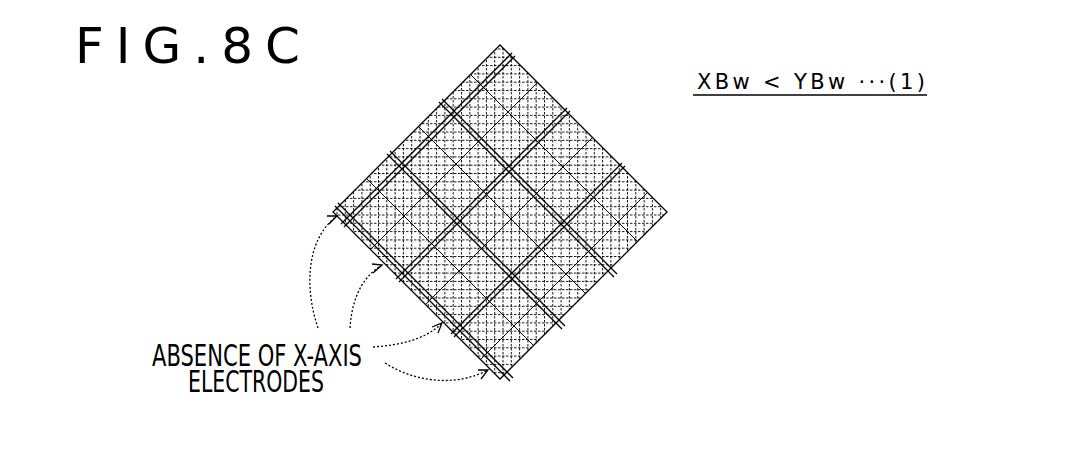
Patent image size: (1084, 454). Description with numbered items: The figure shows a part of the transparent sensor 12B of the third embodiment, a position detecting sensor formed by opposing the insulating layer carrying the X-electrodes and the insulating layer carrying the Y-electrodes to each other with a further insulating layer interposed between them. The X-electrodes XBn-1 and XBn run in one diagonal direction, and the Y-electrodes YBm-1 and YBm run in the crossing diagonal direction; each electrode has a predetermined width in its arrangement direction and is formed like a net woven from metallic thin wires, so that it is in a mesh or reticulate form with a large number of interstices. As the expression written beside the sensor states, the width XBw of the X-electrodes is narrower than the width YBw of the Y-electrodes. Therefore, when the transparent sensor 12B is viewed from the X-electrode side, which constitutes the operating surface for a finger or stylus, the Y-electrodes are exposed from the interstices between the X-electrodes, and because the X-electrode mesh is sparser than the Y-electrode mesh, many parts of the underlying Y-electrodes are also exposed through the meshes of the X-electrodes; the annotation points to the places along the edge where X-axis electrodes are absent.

The transparent sensor 12B is at (380, 167).
The X-electrode XBn-1 is at (480, 135).
The X-electrode XBn is at (518, 190).
The Y-electrode YBm is at (521, 240).
The Y-electrode YBm-1 is at (481, 292).